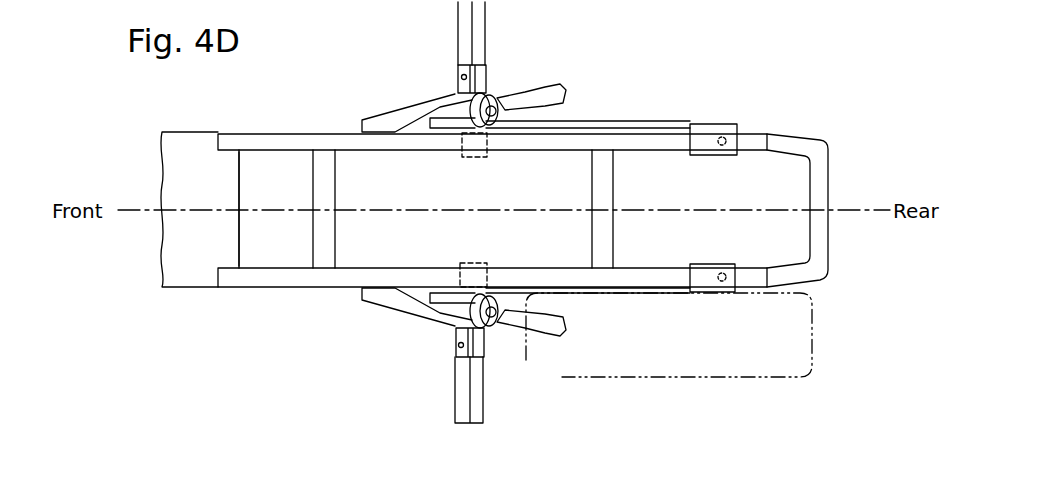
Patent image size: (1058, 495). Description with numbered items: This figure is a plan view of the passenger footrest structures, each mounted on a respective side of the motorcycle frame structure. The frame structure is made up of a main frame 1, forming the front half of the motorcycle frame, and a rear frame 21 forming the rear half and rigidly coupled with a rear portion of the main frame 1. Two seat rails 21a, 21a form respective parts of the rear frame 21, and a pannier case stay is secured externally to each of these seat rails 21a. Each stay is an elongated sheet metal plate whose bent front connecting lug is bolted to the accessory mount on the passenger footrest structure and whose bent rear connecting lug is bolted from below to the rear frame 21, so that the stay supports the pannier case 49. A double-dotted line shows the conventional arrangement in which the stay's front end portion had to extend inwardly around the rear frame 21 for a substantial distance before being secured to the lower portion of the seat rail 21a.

The main frame 1 is at (190, 150).
The rear frame 21 is at (305, 347).
The seat rails 21a is at (281, 134).
The pannier case 49 is at (813, 338).